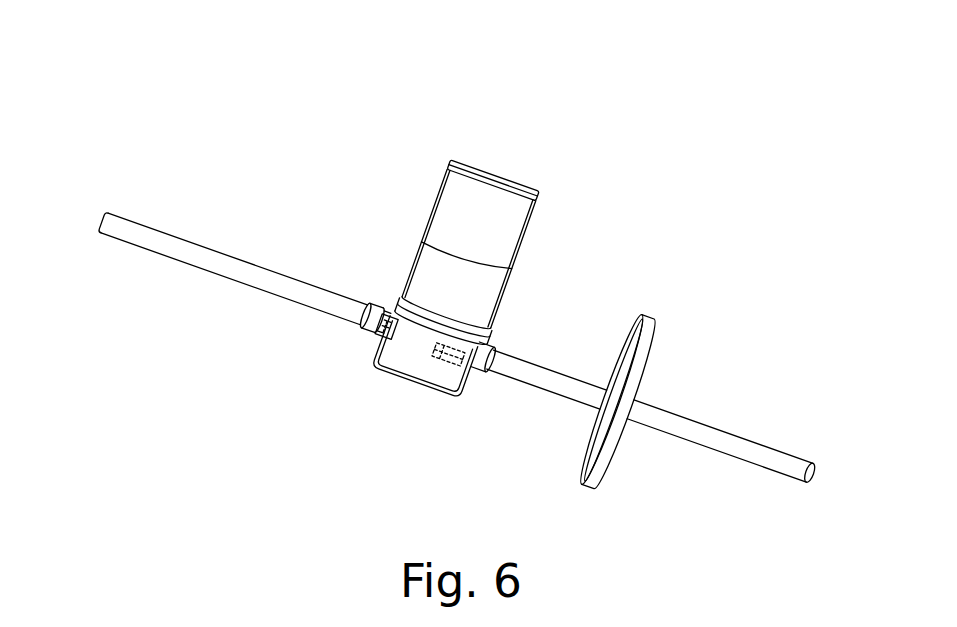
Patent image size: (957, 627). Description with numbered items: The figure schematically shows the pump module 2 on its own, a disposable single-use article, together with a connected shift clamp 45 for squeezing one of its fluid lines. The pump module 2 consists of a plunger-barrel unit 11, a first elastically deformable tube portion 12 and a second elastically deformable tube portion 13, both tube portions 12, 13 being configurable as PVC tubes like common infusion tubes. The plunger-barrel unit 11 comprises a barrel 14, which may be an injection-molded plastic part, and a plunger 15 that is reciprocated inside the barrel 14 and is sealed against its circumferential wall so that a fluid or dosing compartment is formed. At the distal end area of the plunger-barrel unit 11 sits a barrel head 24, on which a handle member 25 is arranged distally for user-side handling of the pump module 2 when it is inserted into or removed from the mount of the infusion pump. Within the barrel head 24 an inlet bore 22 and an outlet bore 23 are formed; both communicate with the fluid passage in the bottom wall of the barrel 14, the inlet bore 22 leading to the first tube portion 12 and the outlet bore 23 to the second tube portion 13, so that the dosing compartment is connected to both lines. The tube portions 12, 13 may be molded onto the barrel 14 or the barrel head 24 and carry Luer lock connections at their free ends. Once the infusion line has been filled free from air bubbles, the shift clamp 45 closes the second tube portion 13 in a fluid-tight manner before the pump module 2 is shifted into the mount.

The pump module 2 is at (458, 289).
The plunger-barrel unit 11 is at (500, 222).
The first elastically deformable tube portion 12 is at (180, 253).
The second elastically deformable tube portion 13 is at (713, 437).
The barrel 14 is at (470, 244).
The plunger 15 is at (466, 256).
The inlet bore 22 is at (379, 310).
The outlet bore 23 is at (455, 350).
The barrel head 24 is at (392, 337).
The handle member 25 is at (418, 390).
The shift clamp 45 is at (598, 462).